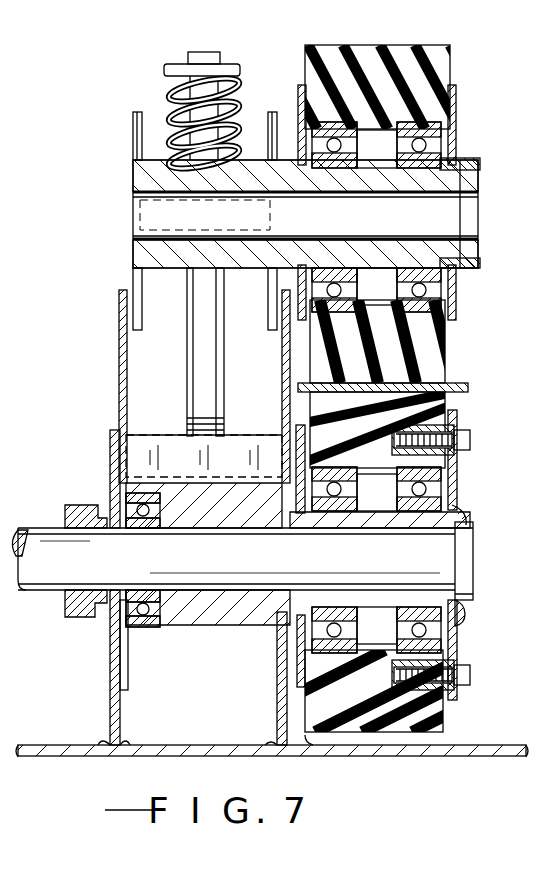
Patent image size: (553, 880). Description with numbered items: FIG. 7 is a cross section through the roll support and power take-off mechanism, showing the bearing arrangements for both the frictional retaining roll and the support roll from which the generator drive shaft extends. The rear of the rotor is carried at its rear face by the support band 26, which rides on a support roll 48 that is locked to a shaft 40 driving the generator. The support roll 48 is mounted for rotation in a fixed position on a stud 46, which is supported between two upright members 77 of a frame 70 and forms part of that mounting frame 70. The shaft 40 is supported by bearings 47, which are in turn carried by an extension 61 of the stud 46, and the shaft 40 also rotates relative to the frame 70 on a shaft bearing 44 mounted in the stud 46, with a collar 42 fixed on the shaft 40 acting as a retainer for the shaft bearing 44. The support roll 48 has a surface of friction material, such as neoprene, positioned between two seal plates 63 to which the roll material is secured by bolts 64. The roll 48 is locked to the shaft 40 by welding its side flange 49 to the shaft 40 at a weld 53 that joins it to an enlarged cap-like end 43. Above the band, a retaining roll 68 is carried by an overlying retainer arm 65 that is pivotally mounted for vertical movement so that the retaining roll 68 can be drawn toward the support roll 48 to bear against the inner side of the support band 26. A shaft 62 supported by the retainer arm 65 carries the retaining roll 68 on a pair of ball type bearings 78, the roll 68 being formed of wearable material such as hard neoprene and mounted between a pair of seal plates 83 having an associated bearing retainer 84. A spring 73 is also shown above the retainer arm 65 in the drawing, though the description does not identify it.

The support band 26 is at (466, 384).
The shaft 40 is at (36, 528).
The collar 42 is at (68, 616).
The enlarged cap-like end 43 is at (474, 552).
The shaft bearing 44 is at (118, 462).
The stud 46 is at (112, 678).
The bearings 47 is at (355, 452).
The support roll 48 is at (448, 412).
The side flange 49 is at (452, 473).
The weld 53 is at (466, 609).
The extension 61 is at (368, 614).
The shaft 62 is at (132, 180).
The seal plates 63 is at (283, 666).
The bolts 64 is at (470, 440).
The retainer arm 65 is at (133, 129).
The retaining roll 68 is at (450, 62).
The frame 70 is at (118, 386).
The compression spring 73 is at (174, 58).
The upright members 77 is at (126, 372).
The ball type bearings 78 is at (440, 130).
The seal plates 83 is at (460, 148).
The bearing retainer 84 is at (462, 272).